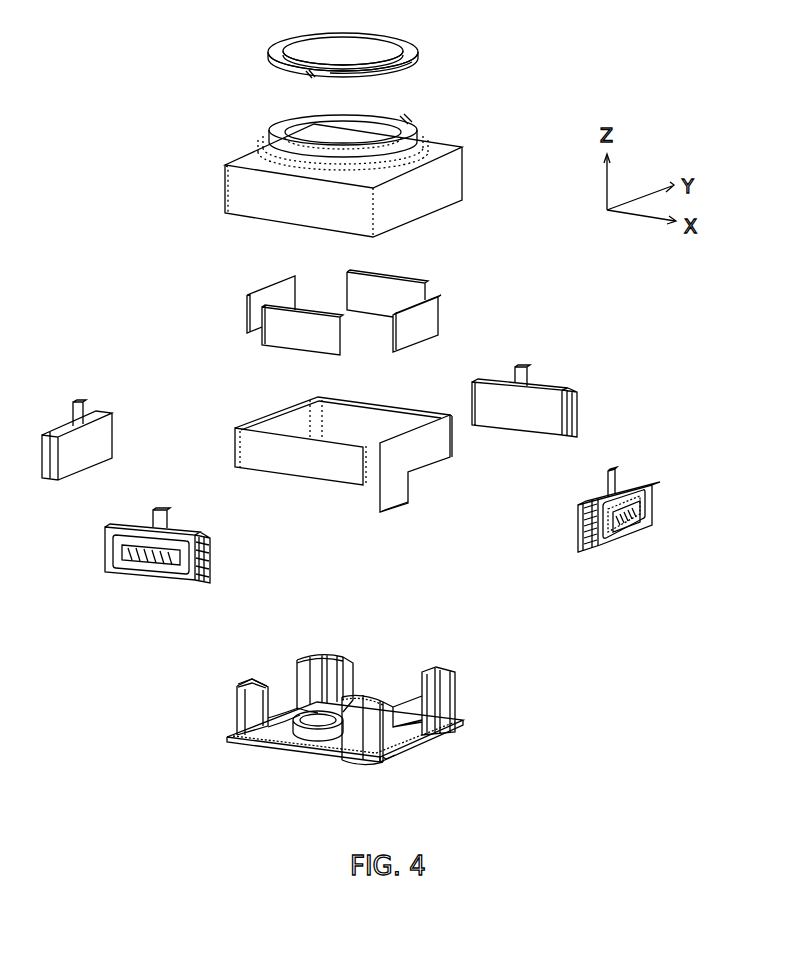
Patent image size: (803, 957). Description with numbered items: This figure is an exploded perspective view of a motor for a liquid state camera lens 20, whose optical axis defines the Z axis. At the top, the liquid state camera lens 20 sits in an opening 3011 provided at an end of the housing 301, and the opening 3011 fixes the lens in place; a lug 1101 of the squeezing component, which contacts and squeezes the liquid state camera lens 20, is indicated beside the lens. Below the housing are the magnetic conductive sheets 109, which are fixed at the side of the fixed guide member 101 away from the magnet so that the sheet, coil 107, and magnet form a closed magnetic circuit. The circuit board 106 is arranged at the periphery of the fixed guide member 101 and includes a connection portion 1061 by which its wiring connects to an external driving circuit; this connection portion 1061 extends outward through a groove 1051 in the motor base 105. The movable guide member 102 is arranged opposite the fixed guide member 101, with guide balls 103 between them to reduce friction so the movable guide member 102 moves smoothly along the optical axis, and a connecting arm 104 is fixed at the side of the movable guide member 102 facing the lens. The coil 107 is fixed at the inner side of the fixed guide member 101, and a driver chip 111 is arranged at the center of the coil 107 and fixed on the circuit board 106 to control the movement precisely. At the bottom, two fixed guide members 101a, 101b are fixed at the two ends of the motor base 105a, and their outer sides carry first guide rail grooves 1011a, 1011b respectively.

The liquid state camera lens 20 is at (266, 53).
The lug 1101 is at (401, 79).
The housing 301 is at (243, 198).
The opening 3011 is at (407, 131).
The magnetic conductive sheet 109 is at (280, 341).
The circuit board 106 is at (362, 473).
The connection portion 1061 is at (396, 502).
The movable guide member 102 is at (614, 505).
The guide balls 103 is at (593, 560).
The connecting arm 104 is at (614, 468).
The coil 107 is at (637, 545).
The driver chip 111 is at (651, 522).
The fixed guide member 101 is at (340, 708).
The fixed guide member 101a is at (250, 716).
The fixed guide member 101b is at (358, 740).
The first guide rail groove 1011a is at (266, 683).
The first guide rail groove 1011b is at (360, 694).
The motor base 105 is at (353, 757).
The motor base 105a is at (288, 757).
The groove 1051 is at (405, 756).